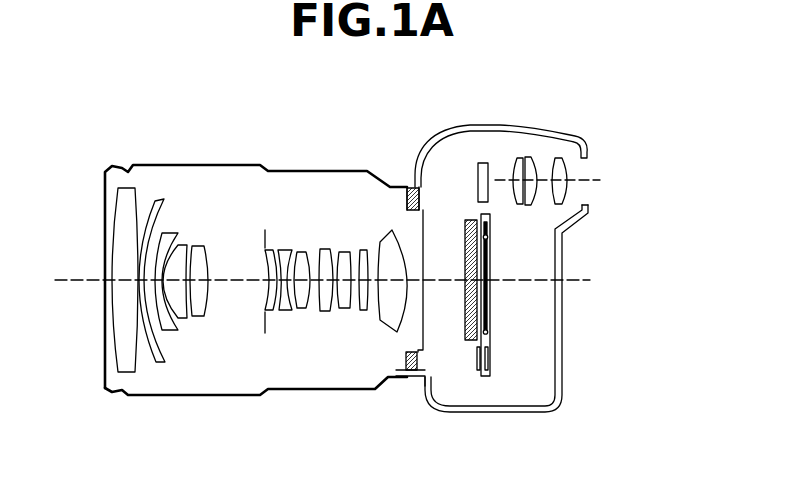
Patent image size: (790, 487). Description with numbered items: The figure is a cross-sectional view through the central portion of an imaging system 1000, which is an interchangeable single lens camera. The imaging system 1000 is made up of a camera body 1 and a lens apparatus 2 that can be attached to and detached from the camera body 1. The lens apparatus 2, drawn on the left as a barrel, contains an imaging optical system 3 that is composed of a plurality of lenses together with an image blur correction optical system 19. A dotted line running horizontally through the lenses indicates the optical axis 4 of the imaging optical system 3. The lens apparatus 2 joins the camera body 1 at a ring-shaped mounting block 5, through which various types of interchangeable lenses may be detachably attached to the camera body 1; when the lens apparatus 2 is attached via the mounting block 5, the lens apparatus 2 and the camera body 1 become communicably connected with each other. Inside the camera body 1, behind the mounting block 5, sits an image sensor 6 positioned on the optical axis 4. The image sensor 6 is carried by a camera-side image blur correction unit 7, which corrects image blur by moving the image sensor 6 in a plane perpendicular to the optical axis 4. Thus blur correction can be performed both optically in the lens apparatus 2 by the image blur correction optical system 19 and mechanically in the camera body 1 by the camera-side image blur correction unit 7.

The imaging system 1000 is at (592, 92).
The camera body 1 is at (518, 126).
The lens apparatus 2 is at (207, 163).
The imaging optical system 3 is at (181, 380).
The optical axis 4 is at (70, 283).
The mounting block 5 is at (410, 378).
The image sensor 6 is at (478, 378).
The camera-side image blur correction unit 7 is at (508, 378).
The image blur correction optical system 19 is at (305, 310).